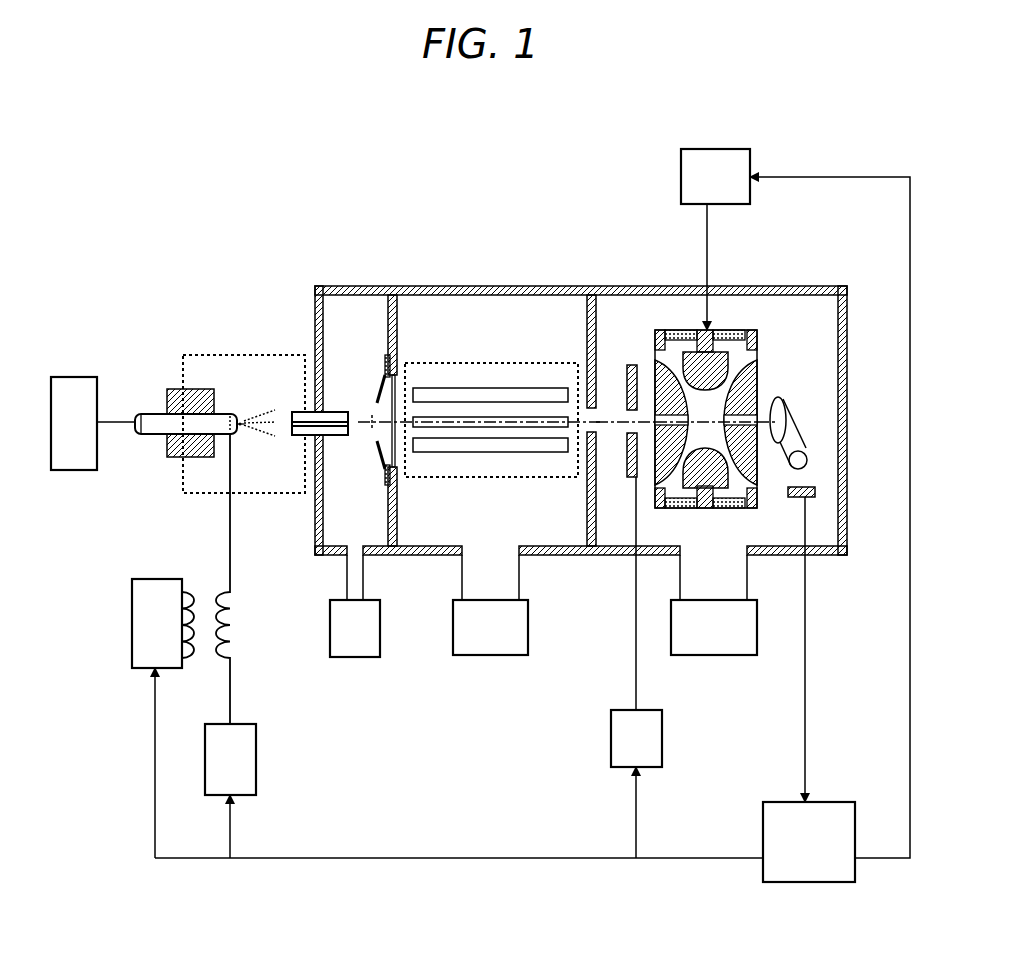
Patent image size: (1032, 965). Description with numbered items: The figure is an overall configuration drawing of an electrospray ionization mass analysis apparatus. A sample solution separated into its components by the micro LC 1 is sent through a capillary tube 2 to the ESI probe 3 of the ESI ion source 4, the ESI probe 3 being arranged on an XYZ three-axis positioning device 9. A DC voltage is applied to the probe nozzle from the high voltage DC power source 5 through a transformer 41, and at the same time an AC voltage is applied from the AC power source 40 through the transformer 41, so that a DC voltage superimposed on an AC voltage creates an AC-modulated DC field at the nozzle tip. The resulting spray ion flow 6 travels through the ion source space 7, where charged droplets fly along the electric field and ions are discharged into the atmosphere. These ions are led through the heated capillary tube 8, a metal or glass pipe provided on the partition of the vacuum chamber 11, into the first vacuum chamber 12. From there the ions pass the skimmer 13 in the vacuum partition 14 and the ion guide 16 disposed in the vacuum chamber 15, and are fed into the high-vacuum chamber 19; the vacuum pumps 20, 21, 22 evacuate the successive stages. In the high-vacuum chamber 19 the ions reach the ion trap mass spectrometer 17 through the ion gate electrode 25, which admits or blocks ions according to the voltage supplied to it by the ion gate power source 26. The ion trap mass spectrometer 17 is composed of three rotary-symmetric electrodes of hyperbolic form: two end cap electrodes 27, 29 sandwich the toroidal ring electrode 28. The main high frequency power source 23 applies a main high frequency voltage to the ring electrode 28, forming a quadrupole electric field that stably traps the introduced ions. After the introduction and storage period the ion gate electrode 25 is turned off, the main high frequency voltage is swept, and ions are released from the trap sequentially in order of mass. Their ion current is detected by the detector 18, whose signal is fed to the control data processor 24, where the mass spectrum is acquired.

The micro LC 1 is at (77, 376).
The capillary tube 2 is at (116, 418).
The ESI probe 3 is at (150, 412).
The ESI ion source 4 is at (217, 362).
The high voltage DC power source 5 is at (206, 777).
The spray ion flow 6 is at (263, 410).
The ion source space 7 is at (247, 466).
The capillary tube 8 is at (288, 412).
The XYZ three-axis positioning device 9 is at (170, 458).
The vacuum chamber 11 is at (316, 316).
The vacuum chamber 12 is at (329, 331).
The skimmer 13 is at (376, 400).
The vacuum partition 14 is at (397, 364).
The vacuum chamber 15 is at (549, 331).
The ion guide 16 is at (430, 452).
The ion trap mass spectrometer 17 is at (677, 306).
The detector 18 is at (795, 410).
The high-vacuum chamber 19 is at (600, 355).
The vacuum pump 20 is at (359, 659).
The vacuum pump 21 is at (487, 657).
The vacuum pump 22 is at (708, 657).
The main high frequency power source 23 is at (709, 148).
The control data processor 24 is at (803, 884).
The ion gate electrode 25 is at (625, 470).
The ion gate power source 26 is at (618, 708).
The end cap electrode 27 is at (655, 372).
The ring electrode 28 is at (725, 355).
The rod electrode 29 is at (757, 380).
The AC power source 40 is at (130, 616).
The transformer 41 is at (232, 622).